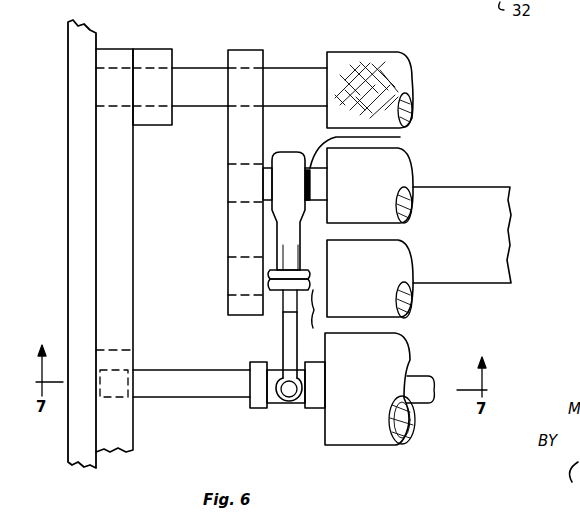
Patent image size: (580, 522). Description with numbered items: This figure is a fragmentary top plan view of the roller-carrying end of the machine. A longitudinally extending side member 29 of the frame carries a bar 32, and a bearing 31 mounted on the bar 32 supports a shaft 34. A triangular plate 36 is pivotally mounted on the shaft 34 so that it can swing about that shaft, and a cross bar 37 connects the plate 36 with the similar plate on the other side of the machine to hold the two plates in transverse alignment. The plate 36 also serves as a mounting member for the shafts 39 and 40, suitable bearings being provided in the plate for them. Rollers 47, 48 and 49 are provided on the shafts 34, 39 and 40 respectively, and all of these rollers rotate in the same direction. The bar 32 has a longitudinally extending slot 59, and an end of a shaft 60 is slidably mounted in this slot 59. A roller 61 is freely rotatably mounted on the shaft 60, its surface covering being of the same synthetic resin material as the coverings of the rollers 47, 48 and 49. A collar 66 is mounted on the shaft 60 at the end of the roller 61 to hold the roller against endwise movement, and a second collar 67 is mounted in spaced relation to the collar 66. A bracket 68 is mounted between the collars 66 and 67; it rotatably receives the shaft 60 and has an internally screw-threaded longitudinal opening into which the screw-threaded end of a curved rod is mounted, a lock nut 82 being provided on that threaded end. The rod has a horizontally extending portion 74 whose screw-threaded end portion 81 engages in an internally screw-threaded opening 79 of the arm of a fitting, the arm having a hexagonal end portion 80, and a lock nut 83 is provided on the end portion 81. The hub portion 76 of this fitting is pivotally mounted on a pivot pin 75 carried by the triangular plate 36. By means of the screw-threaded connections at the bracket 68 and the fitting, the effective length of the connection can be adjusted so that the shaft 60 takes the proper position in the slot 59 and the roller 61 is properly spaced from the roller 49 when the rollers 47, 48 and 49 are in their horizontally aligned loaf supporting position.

The side member 29 is at (70, 107).
The bearing 31 is at (148, 56).
The bar 32 is at (120, 242).
The shaft 34 is at (275, 74).
The triangular plate 36 is at (246, 58).
The cross bar 37 is at (500, 204).
The shaft 39 is at (398, 137).
The shaft 40 is at (312, 305).
The roller 47 is at (354, 62).
The roller 48 is at (410, 160).
The roller 49 is at (420, 299).
The slot 59 is at (128, 360).
The shaft 60 is at (166, 390).
The roller 61 is at (408, 340).
The collar 66 is at (316, 409).
The collar 67 is at (258, 410).
The bracket 68 is at (274, 404).
The portion 74 is at (290, 346).
The pivot pin 75 is at (270, 182).
The hub portion 76 is at (285, 160).
The internally screw-threaded opening 79 is at (283, 256).
The hexagonal end portion 80 is at (275, 272).
The screw-threaded end portion 81 is at (283, 312).
The lock nut 82 is at (290, 404).
The lock nut 83 is at (275, 284).